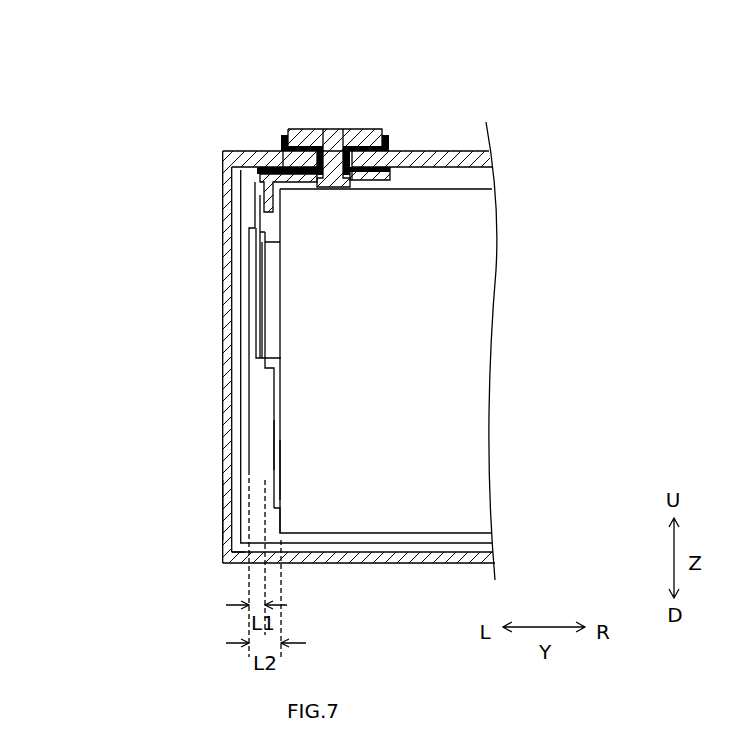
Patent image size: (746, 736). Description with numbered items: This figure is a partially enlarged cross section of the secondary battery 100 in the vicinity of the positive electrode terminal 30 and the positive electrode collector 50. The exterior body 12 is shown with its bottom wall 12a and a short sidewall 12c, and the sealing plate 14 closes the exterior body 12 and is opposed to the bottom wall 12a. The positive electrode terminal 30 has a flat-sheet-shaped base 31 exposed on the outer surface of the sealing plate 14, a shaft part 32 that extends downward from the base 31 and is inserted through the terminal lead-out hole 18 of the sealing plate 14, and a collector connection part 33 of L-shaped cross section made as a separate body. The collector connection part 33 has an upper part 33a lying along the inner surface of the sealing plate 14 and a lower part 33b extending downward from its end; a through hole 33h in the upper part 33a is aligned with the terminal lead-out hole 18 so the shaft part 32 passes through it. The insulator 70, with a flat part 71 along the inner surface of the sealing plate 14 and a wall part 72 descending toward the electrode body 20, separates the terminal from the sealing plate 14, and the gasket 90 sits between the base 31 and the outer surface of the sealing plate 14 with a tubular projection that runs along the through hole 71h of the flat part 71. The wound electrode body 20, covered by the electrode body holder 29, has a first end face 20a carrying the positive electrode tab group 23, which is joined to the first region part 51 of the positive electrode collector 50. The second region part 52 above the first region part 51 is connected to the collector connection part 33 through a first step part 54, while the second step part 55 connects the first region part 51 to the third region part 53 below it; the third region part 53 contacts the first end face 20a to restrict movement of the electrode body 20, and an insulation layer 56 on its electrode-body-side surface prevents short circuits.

The secondary battery 100 is at (62, 44).
The exterior body 12 is at (220, 162).
The bottom wall 12a is at (428, 565).
The short sidewall 12c is at (222, 512).
The sealing plate 14 is at (460, 150).
The terminal lead-out hole 18 is at (282, 163).
The electrode body 20 is at (470, 418).
The first end face 20a is at (275, 522).
The positive electrode tab group 23 is at (270, 337).
The electrode body holder 29 is at (238, 533).
The positive electrode terminal 30 is at (352, 103).
The base 31 is at (327, 140).
The shaft part 32 is at (345, 135).
The collector connection part 33 is at (378, 132).
The upper part 33a is at (262, 171).
The lower part 33b is at (259, 185).
The through hole 33h is at (317, 118).
The positive electrode collector 50 is at (245, 270).
The first region part 51 is at (256, 290).
The second region part 52 is at (243, 210).
The third region part 53 is at (270, 440).
The first step part 54 is at (253, 232).
The second step part 55 is at (262, 368).
The insulation layer 56 is at (284, 470).
The insulator 70 is at (478, 217).
The flat part 71 is at (388, 169).
The through hole 71h is at (392, 195).
The wall part 72 is at (388, 180).
The gasket 90 is at (390, 130).